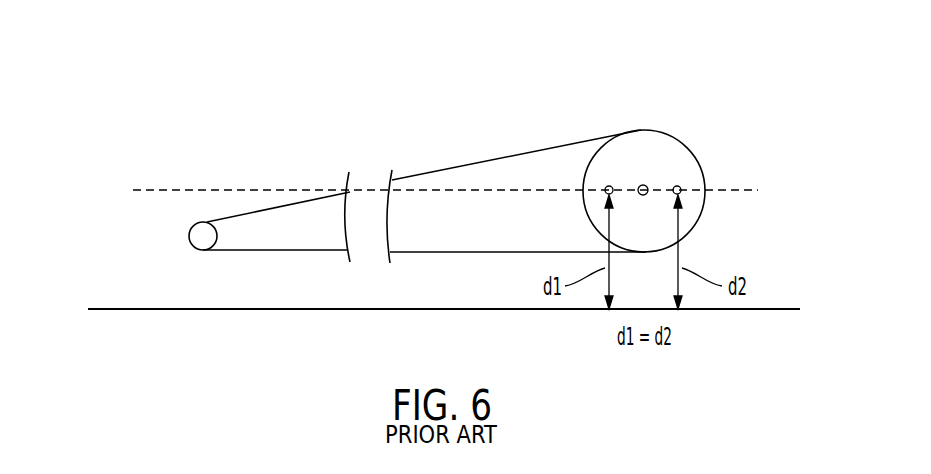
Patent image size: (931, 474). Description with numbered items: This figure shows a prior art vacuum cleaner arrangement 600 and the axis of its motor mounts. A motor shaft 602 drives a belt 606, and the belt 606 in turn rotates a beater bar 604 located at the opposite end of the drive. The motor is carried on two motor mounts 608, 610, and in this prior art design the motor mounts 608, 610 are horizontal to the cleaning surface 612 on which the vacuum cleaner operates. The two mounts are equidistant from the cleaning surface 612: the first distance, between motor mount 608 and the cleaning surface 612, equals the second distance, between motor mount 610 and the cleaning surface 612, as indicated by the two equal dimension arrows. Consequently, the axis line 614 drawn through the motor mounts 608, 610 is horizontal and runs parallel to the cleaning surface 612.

The prior art launcher assembly 600 is at (247, 88).
The motor shaft 602 is at (645, 184).
The beater bar 604 is at (217, 236).
The belt 606 is at (515, 155).
The motor mount 608 is at (609, 185).
The motor mount 610 is at (681, 186).
The cleaning surface 612 is at (125, 308).
The axis line 614 is at (200, 189).